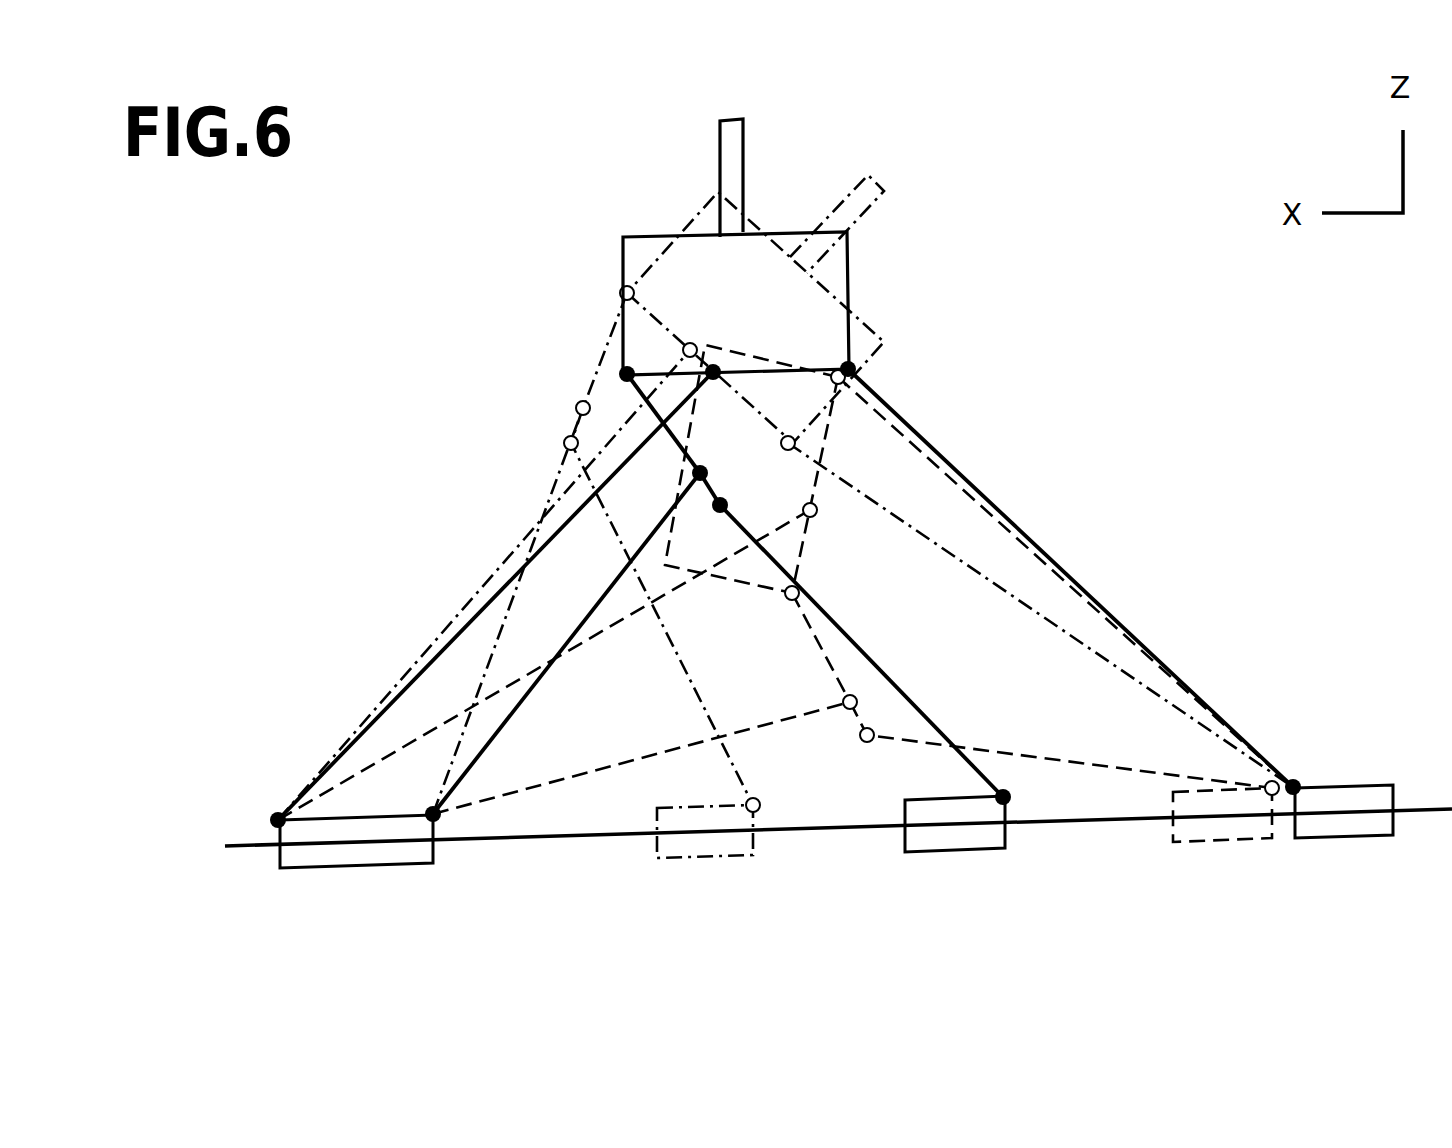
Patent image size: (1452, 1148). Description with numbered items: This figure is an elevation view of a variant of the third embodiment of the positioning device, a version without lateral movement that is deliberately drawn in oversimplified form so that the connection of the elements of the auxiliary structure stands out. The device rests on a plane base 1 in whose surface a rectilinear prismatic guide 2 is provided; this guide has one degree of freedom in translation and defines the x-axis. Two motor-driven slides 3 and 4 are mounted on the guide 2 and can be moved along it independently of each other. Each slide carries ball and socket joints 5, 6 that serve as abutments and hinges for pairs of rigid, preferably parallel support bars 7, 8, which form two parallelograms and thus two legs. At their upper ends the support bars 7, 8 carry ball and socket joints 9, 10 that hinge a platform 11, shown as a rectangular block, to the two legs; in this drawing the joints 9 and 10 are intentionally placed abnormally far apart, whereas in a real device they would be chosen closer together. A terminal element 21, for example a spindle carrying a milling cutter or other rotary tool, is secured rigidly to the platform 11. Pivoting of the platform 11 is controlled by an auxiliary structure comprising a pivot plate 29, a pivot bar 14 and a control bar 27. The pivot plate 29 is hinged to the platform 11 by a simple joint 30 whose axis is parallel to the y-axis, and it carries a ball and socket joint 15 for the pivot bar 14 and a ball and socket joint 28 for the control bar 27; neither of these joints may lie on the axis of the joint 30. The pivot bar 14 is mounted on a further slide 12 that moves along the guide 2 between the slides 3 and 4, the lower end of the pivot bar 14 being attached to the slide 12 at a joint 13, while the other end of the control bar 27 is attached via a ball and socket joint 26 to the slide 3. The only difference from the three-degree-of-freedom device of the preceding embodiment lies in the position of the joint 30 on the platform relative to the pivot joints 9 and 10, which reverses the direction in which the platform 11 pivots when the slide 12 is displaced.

The plane base 1 is at (807, 893).
The prismatic guide 2 is at (572, 840).
The motor-driven slide 3 is at (345, 857).
The motor-driven slide 4 is at (1340, 825).
The ball and socket joint 5 is at (278, 812).
The ball and socket joint 6 is at (1300, 780).
The support bars 7 is at (472, 613).
The support bars 8 is at (968, 482).
The ball and socket joint 9 is at (716, 370).
The ball and socket joint 10 is at (856, 368).
The platform 11 is at (641, 237).
The slide 12 is at (950, 840).
The pivot joint of second carriage 13 is at (1012, 795).
The pivot bar 14 is at (870, 660).
The ball and socket joint 15 is at (728, 503).
The terminal element 21 is at (743, 150).
The ball and socket joint 26 is at (440, 820).
The control bar 27 is at (503, 727).
The ball and socket joint 28 is at (707, 470).
The pivot plate 29 is at (688, 430).
The joint 30 is at (627, 373).